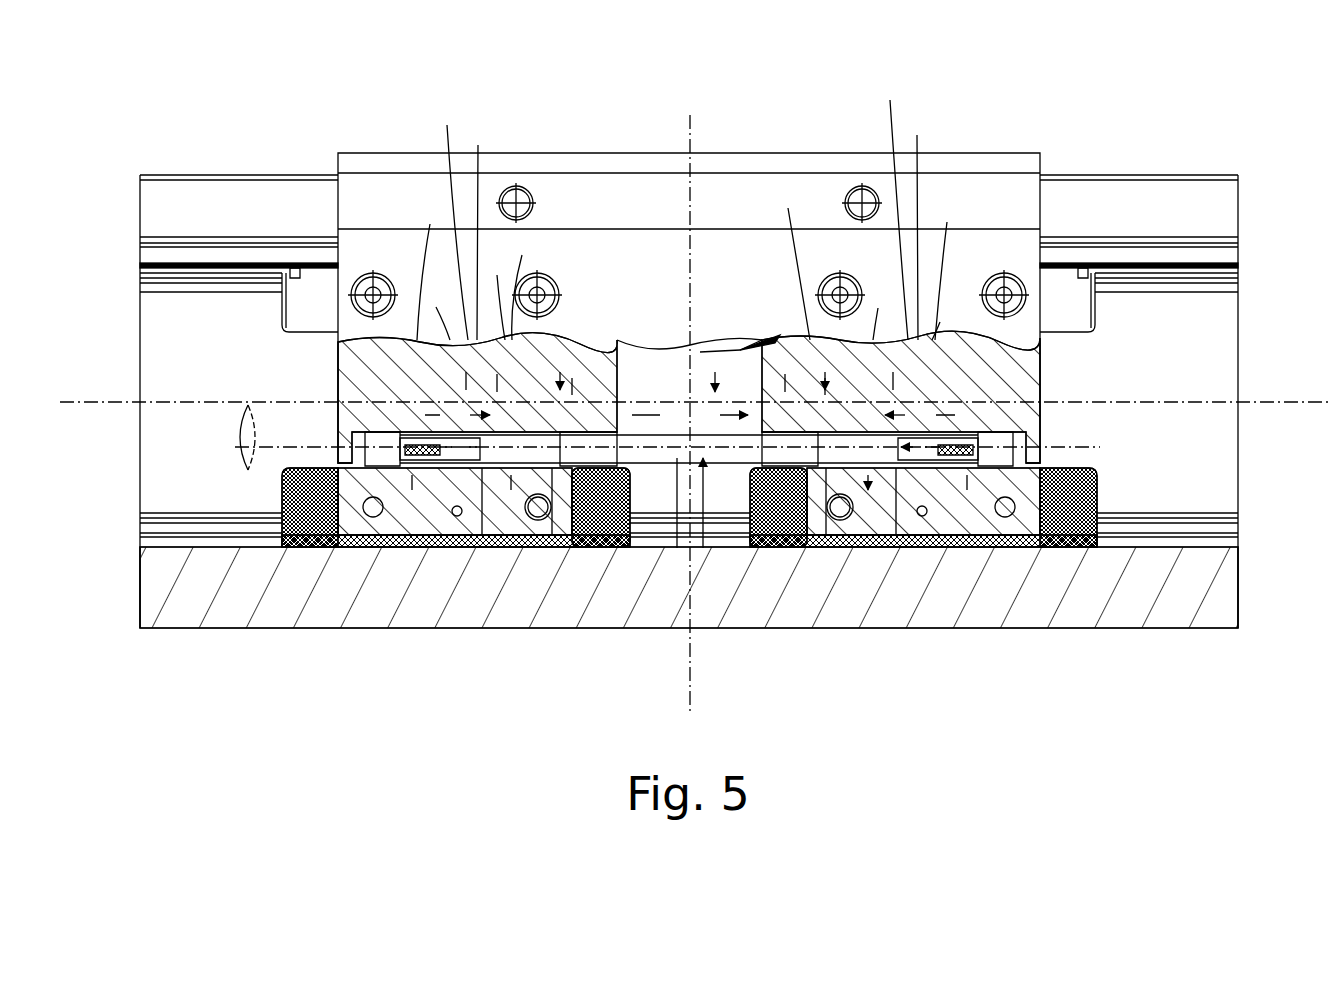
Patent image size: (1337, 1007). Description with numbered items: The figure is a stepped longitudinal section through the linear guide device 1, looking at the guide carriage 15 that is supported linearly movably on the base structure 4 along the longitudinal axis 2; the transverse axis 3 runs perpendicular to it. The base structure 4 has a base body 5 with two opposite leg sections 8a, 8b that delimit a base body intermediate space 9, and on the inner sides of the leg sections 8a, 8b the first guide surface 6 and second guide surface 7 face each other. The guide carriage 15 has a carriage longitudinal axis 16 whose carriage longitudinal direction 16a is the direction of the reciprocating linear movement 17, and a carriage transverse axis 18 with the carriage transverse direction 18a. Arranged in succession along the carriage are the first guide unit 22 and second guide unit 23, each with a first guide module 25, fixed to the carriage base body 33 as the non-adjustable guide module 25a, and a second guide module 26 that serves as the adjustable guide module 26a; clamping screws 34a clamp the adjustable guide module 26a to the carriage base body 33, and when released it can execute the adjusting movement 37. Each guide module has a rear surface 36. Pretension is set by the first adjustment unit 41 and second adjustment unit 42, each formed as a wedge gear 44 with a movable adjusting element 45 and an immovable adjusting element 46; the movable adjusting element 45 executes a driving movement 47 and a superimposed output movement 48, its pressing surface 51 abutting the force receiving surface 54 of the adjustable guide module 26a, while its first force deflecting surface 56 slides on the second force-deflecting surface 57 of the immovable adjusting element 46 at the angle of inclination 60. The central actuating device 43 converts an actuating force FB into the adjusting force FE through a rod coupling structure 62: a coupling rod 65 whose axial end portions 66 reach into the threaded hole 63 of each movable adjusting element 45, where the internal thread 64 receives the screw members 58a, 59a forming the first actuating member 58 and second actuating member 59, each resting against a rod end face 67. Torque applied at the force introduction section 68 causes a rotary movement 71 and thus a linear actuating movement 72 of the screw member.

The linear guide device 1 is at (1200, 148).
The longitudinal axis 2 is at (695, 426).
The transverse axis 3 is at (690, 122).
The base structure 4 is at (1212, 201).
The base body 5 is at (1222, 612).
The first guide surface 6 is at (218, 278).
The second guide surface 7 is at (178, 543).
The leg section 8a is at (162, 192).
The leg section 8b is at (165, 590).
The base body intermediate space 9 is at (1212, 308).
The guide carriage 15 is at (676, 210).
The carriage longitudinal axis 16 is at (781, 400).
The carriage longitudinal direction 16a is at (1268, 402).
The linear movement 17 is at (782, 124).
The carriage transverse axis 18 is at (737, 693).
The carriage transverse direction 18a is at (692, 688).
The first guide unit 22 is at (382, 565).
The second guide unit 23 is at (1020, 565).
The first guide module 25 is at (688, 223).
The non-adjustable guide module 25a is at (313, 282).
The second guide module 26 is at (689, 647).
The adjustable guide module 26a is at (436, 550).
The carriage base body 33 is at (612, 160).
The clamping screws 34a is at (378, 290).
The rear surface 36 is at (695, 436).
The adjusting movement 37 is at (498, 547).
The first adjustment unit 41 is at (418, 398).
The second adjustment unit 42 is at (1045, 380).
The central actuating device 43 is at (650, 560).
The wedge gear 44 is at (348, 392).
The movable adjusting element 45 is at (646, 262).
The immovable adjusting element 46 is at (688, 269).
The driving movement 47 is at (688, 313).
The output movement 48 is at (615, 393).
The pressing surface 51 is at (430, 525).
The force receiving surface 54 is at (392, 462).
The first force deflecting surface 56 is at (668, 208).
The second force-deflecting surface 57 is at (698, 225).
The first actuating member 58 is at (605, 387).
The screw member 58a is at (300, 360).
The second actuating member 59 is at (958, 635).
The screw member 59a is at (940, 550).
The angle of inclination 60 is at (726, 342).
The rod coupling structure 62 is at (712, 547).
The threaded hole 63 is at (585, 547).
The internal thread 64 is at (462, 550).
The coupling rod 65 is at (680, 437).
The axial end portions 66 is at (699, 285).
The rod end face 67 is at (560, 547).
The force introduction section 68 is at (372, 540).
The rotary movement 71 is at (248, 426).
The linear actuating movement 72 is at (490, 550).
The adjusting force FE is at (590, 336).
The actuating force FB is at (694, 503).